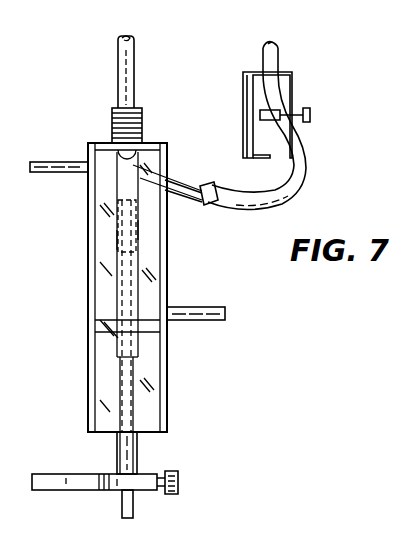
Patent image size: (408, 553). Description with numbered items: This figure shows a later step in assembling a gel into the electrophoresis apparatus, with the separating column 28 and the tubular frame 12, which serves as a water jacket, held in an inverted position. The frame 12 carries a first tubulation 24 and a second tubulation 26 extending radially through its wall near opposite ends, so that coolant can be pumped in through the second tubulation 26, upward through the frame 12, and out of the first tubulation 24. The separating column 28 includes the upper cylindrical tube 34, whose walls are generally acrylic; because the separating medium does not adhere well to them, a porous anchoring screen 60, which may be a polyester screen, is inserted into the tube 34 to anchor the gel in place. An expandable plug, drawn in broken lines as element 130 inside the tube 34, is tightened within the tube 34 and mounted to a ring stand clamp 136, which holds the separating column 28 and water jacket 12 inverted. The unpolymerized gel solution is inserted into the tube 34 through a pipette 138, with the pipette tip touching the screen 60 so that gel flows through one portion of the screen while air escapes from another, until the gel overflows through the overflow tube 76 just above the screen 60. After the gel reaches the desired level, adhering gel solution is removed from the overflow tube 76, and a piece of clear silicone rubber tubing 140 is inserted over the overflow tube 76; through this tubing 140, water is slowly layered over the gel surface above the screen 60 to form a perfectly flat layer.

The tubular frame 12 is at (167, 278).
The first tubulation 24 is at (198, 320).
The second tubulation 26 is at (48, 160).
The separating column 28 is at (108, 244).
The upper cylindrical tube 34 is at (139, 228).
The porous anchoring screen 60 is at (125, 200).
The tube 76 is at (184, 194).
The piston 130 is at (119, 216).
The ring stand clamp 136 is at (80, 488).
The pipette 138 is at (128, 54).
The silicone rubber tubing 140 is at (272, 205).